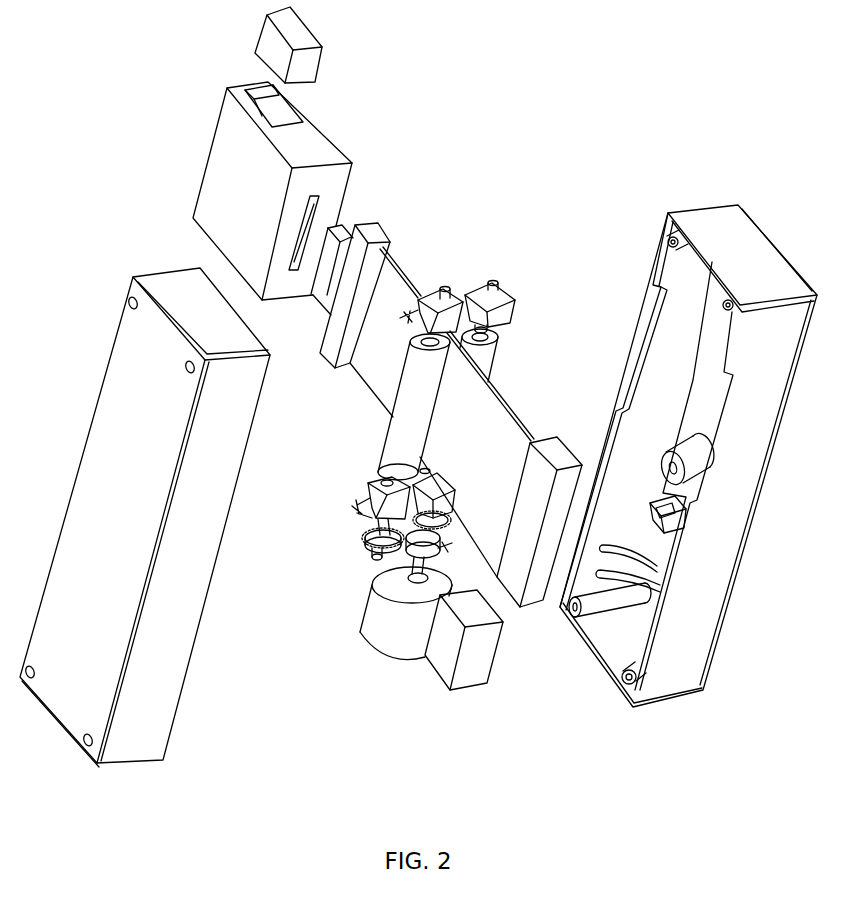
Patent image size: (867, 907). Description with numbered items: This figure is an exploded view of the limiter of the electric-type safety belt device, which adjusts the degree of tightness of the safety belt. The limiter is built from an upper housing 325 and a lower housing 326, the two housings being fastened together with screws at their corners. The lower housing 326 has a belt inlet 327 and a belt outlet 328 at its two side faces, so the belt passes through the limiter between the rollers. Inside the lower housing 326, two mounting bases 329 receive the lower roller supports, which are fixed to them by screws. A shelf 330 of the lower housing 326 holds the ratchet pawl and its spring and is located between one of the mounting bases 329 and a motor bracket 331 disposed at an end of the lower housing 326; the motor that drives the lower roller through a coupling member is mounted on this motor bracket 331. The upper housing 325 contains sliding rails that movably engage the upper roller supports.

The upper housing 325 is at (127, 358).
The lower housing 326 is at (688, 388).
The belt inlet 327 is at (720, 408).
The belt outlet 328 is at (630, 395).
The mounting bases 329 is at (675, 468).
The shelf 330 is at (665, 517).
The motor bracket 331 is at (660, 583).